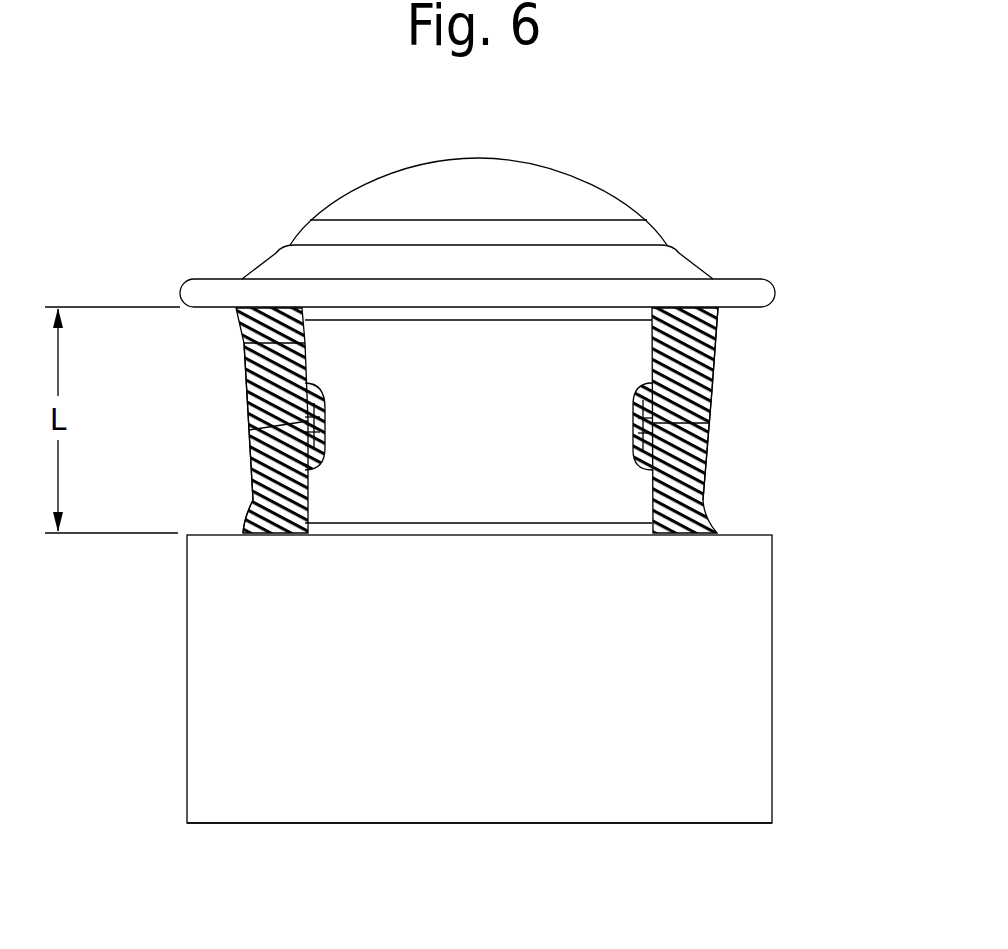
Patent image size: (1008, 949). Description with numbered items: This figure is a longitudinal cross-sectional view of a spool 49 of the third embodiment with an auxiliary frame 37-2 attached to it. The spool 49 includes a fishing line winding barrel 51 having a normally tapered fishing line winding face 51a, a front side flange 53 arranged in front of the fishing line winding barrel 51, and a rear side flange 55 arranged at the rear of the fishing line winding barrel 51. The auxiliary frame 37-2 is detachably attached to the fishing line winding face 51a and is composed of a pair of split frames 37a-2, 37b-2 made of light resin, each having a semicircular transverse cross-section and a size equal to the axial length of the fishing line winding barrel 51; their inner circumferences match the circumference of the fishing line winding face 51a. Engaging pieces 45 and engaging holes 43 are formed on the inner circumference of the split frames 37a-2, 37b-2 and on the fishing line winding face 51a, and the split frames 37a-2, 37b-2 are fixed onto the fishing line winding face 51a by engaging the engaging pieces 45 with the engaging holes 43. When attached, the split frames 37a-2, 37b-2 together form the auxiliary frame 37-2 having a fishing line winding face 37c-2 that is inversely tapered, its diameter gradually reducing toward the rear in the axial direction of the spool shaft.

The front side flange 53 is at (639, 293).
The auxiliary frame 37-2 is at (691, 312).
The fishing line winding face 51a is at (243, 342).
The fishing line winding face 37c-2 is at (247, 393).
The engaging holes 43 is at (257, 428).
The split frame 37a-2 is at (253, 502).
The split frame 37b-2 is at (710, 392).
The engaging pieces 45 is at (320, 417).
The fishing line winding barrel 51 is at (572, 535).
The spool 49 is at (280, 800).
The rear side flange 55 is at (488, 810).